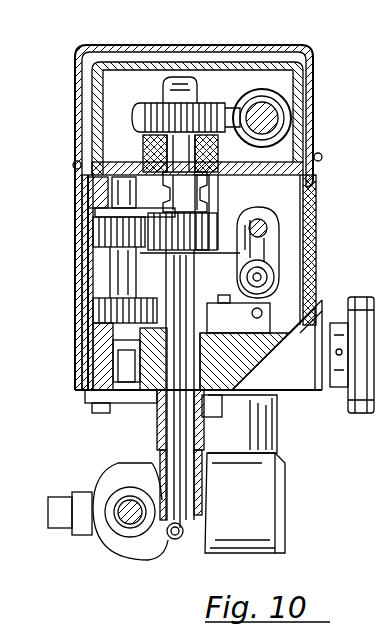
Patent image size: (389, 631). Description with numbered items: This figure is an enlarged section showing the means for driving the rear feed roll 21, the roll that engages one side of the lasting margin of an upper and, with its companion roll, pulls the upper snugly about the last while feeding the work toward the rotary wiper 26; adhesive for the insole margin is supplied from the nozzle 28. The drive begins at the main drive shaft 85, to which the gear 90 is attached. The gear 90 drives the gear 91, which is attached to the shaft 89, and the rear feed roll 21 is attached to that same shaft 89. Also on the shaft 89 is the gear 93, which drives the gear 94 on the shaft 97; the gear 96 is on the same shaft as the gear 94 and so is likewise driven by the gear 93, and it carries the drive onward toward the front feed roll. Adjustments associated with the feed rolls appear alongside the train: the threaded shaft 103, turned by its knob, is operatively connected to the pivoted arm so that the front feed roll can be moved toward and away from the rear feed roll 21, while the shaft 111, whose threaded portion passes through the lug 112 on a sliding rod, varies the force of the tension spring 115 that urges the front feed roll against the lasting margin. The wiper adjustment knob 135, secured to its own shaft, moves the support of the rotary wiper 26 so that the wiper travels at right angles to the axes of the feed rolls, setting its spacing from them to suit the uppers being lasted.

The rear feed roll 21 is at (245, 503).
The rotary wiper 26 is at (106, 496).
The nozzle 28 is at (174, 541).
The main drive shaft 85 is at (293, 128).
The shaft 89 is at (193, 219).
The gear 90 is at (292, 112).
The gear 91 is at (132, 119).
The gear 93 is at (211, 233).
The gear 94 is at (93, 233).
The gear 96 is at (93, 312).
The shaft 97 is at (124, 372).
The threaded shaft 103 is at (308, 285).
The shaft 111 is at (279, 248).
The lug 112 is at (268, 222).
The tension spring 115 is at (275, 282).
The wiper adjustment knob 135 is at (364, 413).